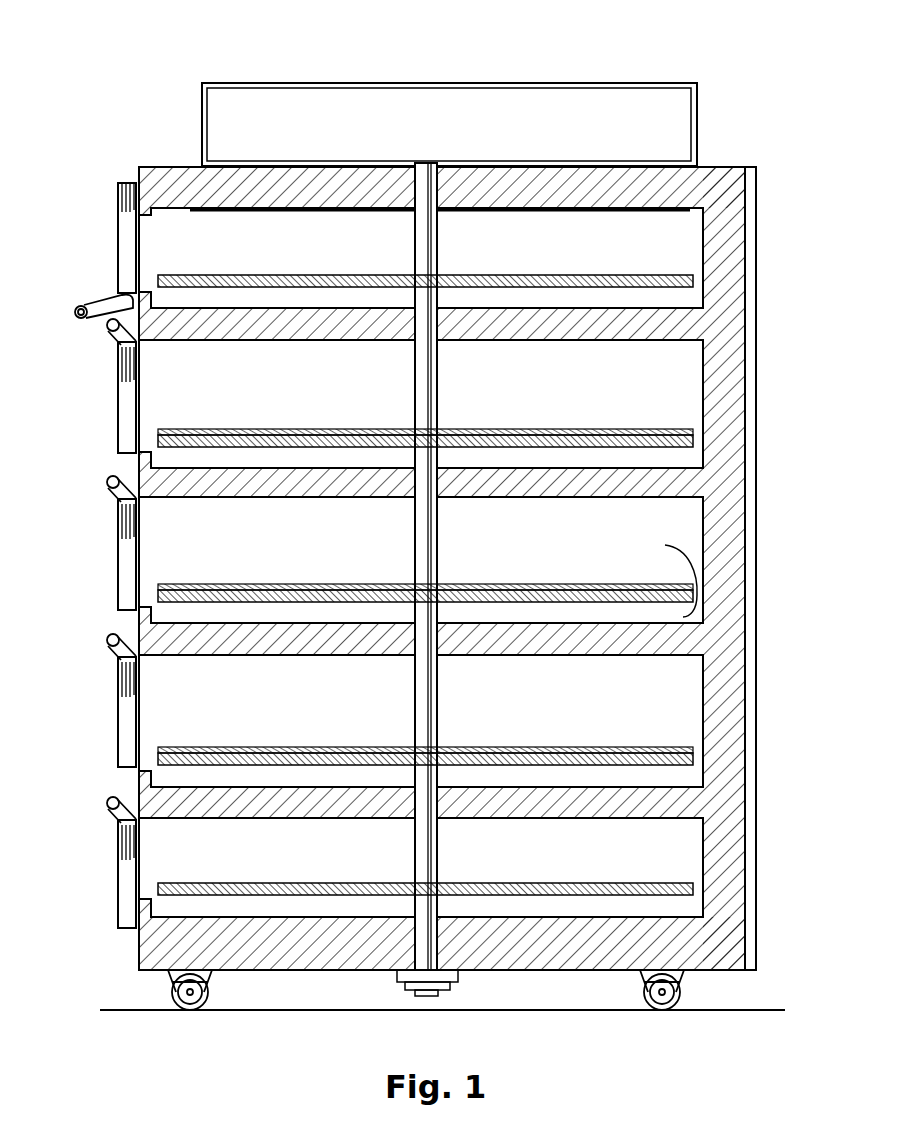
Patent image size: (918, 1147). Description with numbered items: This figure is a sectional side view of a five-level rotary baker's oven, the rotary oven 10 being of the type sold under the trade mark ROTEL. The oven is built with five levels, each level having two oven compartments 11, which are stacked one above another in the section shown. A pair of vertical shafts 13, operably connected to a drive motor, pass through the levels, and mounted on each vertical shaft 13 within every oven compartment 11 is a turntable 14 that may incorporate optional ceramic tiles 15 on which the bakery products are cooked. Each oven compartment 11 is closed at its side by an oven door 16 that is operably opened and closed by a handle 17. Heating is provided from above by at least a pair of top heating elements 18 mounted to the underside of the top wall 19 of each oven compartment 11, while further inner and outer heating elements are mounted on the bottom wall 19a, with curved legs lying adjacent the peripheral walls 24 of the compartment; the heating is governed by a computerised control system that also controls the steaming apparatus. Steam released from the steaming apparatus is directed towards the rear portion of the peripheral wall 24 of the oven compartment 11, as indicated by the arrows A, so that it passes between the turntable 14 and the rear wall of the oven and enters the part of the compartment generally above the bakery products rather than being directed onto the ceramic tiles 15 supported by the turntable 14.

The rotary oven 10 is at (163, 71).
The oven compartment 11 is at (516, 862).
The vertical shaft 13 is at (427, 935).
The turntable 14 is at (290, 437).
The ceramic tile 15 is at (239, 430).
The oven door 16 is at (120, 240).
The handle 17 is at (100, 305).
The top heating element 18 is at (220, 210).
The top wall 19 is at (163, 205).
The bottom wall 19a is at (690, 785).
The peripheral wall 24 is at (703, 384).
The arrows A is at (674, 545).